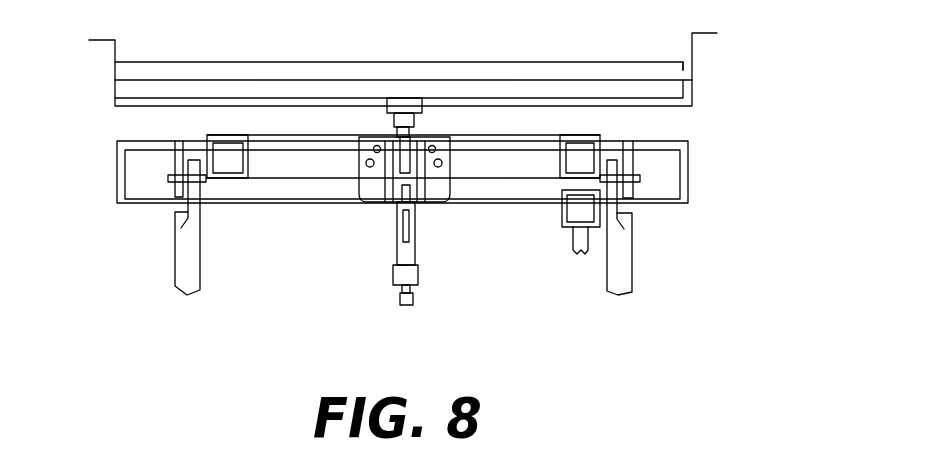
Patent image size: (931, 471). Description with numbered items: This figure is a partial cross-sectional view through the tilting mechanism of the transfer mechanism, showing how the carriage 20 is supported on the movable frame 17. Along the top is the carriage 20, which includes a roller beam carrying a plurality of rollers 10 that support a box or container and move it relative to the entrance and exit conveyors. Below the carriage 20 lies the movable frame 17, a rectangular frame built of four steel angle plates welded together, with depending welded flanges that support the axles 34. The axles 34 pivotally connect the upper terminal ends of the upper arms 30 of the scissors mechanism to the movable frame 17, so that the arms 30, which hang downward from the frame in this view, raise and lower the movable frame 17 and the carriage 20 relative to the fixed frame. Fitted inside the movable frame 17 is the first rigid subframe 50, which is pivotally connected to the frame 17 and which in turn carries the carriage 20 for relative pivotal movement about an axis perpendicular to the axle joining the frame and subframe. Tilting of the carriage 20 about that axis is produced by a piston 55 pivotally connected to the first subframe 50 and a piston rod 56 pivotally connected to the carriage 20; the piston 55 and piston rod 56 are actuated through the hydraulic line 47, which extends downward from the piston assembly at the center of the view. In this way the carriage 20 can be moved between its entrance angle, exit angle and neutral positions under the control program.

The rollers 10 is at (552, 68).
The carriage 20 is at (685, 72).
The movable frame 17 is at (688, 176).
The axles 34 is at (170, 175).
The arms 30 is at (200, 258).
The first rigid subframe 50 is at (312, 166).
The piston 55 is at (398, 253).
The piston rod 56 is at (412, 129).
The hydraulic line 47 is at (415, 297).